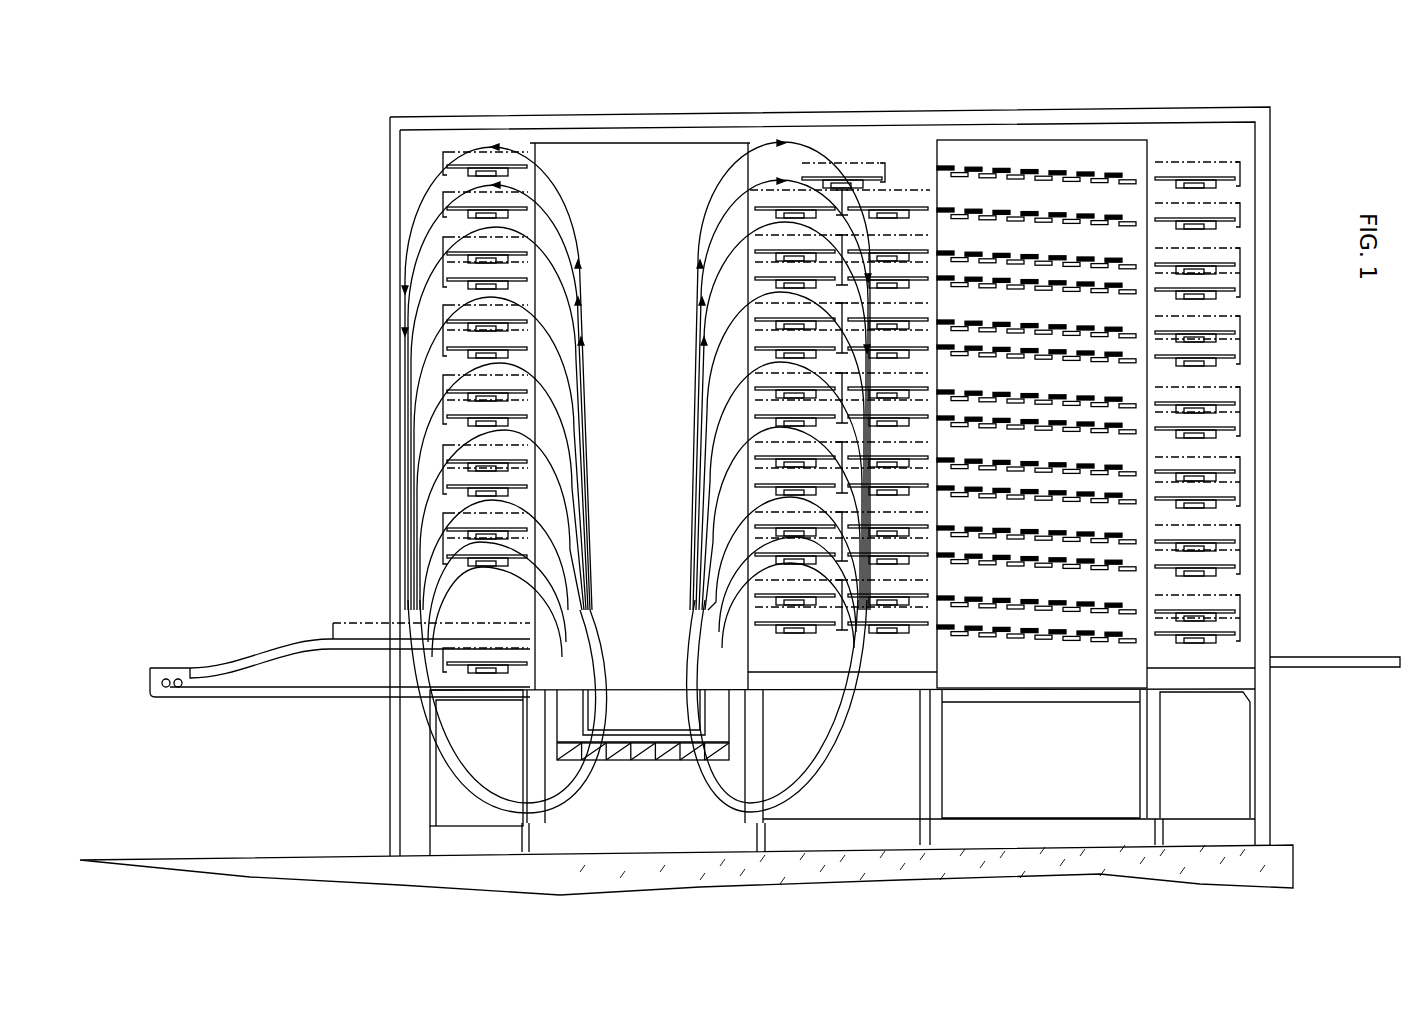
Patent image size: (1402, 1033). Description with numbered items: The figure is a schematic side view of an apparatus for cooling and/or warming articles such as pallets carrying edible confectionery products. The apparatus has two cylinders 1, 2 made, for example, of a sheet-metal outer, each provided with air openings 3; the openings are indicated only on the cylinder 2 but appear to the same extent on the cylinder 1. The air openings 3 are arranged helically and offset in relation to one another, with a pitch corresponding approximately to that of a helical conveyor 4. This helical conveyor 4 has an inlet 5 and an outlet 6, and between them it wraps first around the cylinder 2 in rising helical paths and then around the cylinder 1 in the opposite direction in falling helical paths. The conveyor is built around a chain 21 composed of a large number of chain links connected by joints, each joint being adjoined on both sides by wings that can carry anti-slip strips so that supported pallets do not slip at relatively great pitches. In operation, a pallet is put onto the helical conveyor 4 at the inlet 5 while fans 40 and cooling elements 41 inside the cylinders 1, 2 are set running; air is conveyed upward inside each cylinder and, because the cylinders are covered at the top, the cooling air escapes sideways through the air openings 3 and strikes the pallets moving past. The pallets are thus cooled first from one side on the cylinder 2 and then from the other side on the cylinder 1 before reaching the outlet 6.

The cylinder 1 is at (663, 138).
The cylinder 2 is at (1042, 367).
The air openings 3 is at (1066, 207).
The helical conveyor 4 is at (440, 142).
The inlet 5 is at (1298, 658).
The outlet 6 is at (245, 661).
The chain 21 is at (1243, 255).
The fans 40 is at (625, 705).
The cooling elements 41 is at (640, 757).